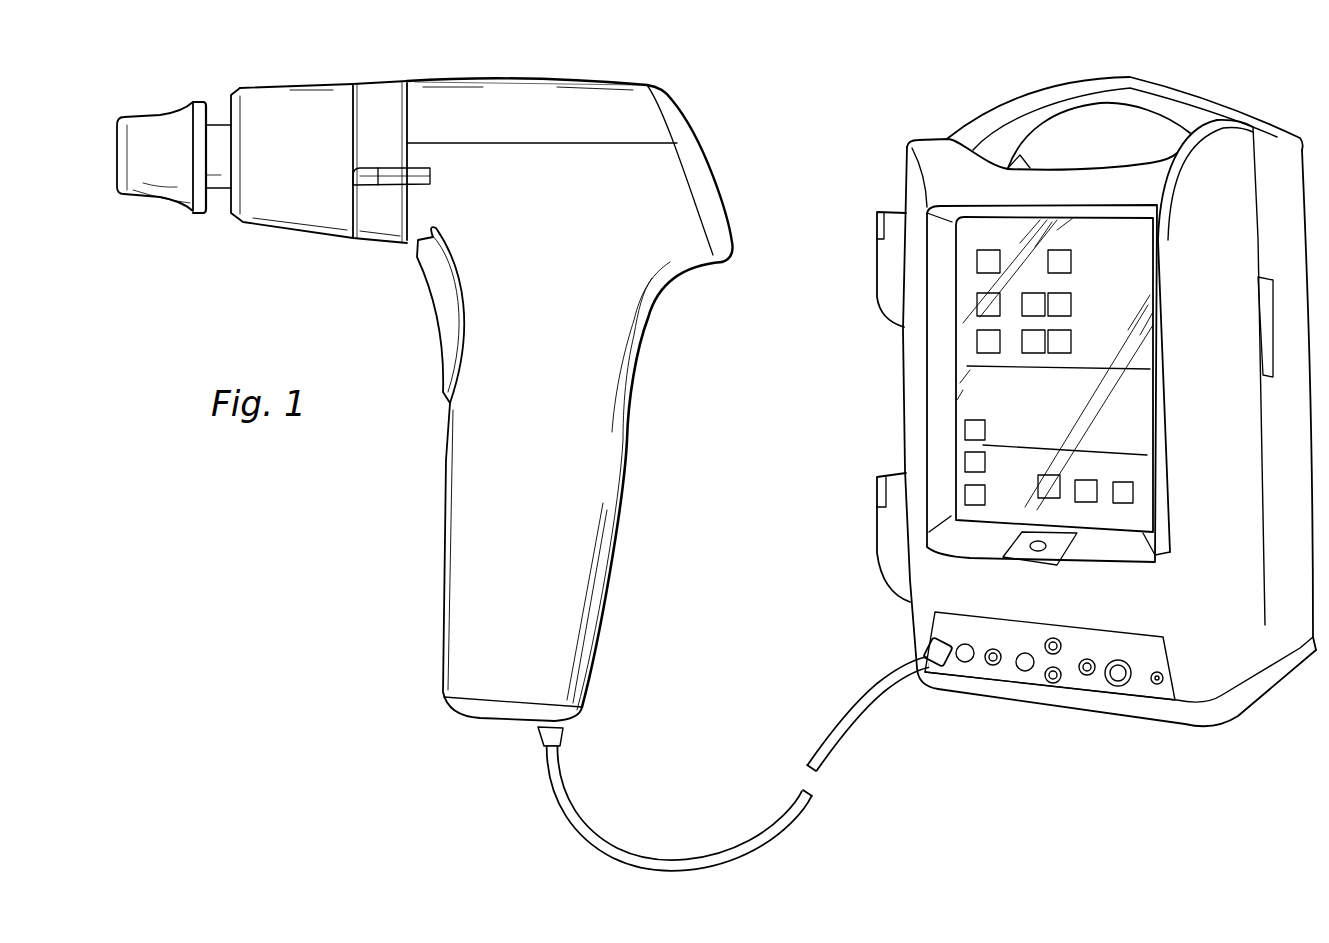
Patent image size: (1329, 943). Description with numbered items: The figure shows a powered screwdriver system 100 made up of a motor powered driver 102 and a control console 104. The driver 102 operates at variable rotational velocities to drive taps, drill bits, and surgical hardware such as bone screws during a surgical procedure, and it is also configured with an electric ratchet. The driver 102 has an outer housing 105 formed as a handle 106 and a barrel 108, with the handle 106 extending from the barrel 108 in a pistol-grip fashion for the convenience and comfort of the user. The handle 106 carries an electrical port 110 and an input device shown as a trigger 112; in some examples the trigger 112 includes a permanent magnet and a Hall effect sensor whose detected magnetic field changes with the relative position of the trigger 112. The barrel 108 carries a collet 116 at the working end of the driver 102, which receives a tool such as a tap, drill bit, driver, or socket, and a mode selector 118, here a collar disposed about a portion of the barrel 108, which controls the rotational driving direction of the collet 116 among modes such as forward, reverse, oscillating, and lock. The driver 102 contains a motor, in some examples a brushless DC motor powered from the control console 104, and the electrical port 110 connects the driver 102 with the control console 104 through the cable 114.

The powered screwdriver system 100 is at (553, 826).
The motor powered driver 102 is at (258, 56).
The control console 104 is at (1216, 86).
The outer housing 105 is at (637, 508).
The handle 106 is at (445, 603).
The barrel 108 is at (503, 100).
The electrical port 110 is at (530, 735).
The trigger 112 is at (437, 313).
The cable 114 is at (803, 803).
The collet 116 is at (153, 113).
The mode selector 118 is at (365, 80).